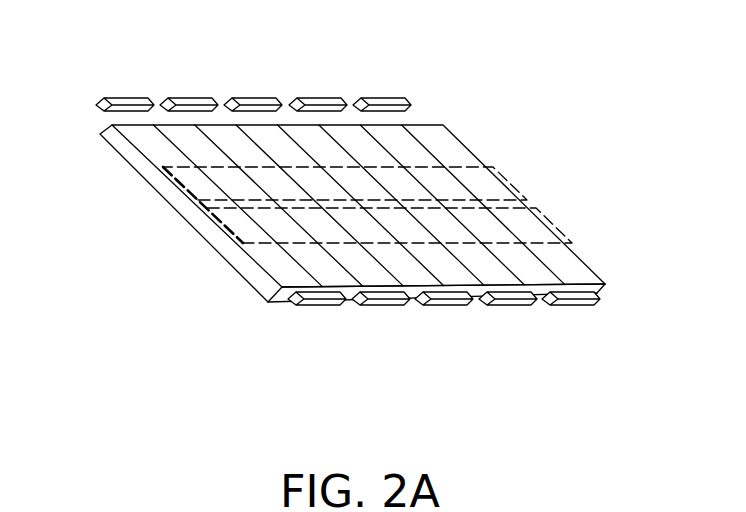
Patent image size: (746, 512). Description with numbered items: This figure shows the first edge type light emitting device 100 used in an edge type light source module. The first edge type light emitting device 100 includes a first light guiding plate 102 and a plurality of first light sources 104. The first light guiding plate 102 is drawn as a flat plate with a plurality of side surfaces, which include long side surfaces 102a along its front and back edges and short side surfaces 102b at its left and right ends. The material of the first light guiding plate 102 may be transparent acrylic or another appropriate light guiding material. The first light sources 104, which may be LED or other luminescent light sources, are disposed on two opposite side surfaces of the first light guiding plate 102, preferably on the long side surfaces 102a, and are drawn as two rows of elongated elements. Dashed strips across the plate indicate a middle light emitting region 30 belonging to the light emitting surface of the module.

The first edge type light emitting device 100 is at (357, 193).
The first light guiding plate 102 is at (110, 138).
The long side surfaces 102a is at (332, 82).
The short side surfaces 102b is at (155, 192).
The first light sources 104 is at (188, 97).
The middle light emitting region 30 is at (521, 184).